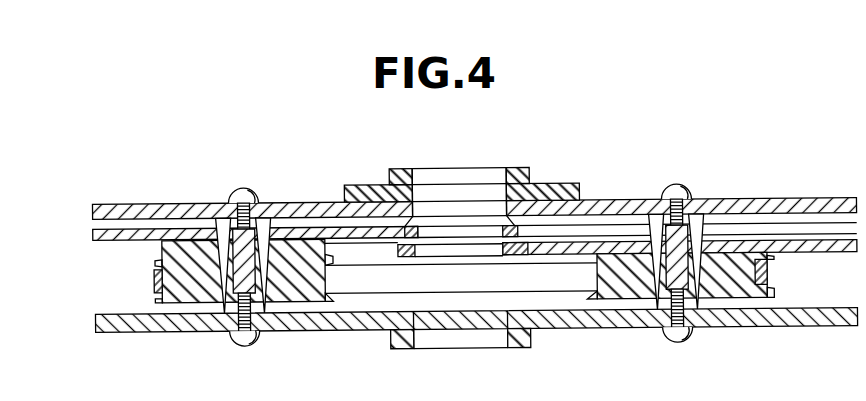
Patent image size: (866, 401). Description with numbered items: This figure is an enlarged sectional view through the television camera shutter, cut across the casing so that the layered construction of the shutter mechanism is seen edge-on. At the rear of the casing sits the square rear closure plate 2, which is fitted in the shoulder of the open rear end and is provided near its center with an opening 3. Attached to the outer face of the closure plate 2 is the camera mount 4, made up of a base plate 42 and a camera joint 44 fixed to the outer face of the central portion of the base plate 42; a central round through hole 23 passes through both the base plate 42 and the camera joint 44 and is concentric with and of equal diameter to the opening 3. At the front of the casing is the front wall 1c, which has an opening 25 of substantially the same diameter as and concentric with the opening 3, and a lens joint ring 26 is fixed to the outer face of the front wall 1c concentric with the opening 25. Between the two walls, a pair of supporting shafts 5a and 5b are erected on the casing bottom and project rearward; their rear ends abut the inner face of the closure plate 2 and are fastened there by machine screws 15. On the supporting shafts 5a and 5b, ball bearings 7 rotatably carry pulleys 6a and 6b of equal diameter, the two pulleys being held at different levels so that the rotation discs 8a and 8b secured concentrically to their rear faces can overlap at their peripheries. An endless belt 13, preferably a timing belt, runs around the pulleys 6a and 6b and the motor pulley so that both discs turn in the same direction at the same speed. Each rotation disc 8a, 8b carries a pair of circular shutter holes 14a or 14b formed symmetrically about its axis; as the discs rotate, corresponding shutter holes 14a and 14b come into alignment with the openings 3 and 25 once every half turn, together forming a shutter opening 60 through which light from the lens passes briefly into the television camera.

The front wall 1c is at (310, 329).
The rear closure plate 2 is at (166, 196).
The opening 3 is at (490, 200).
The camera mount 4 is at (548, 178).
The supporting shaft 5a is at (268, 224).
The supporting shaft 5b is at (700, 224).
The pulley 6a is at (162, 245).
The pulley 6b is at (767, 295).
The ball bearing 7 is at (283, 217).
The rotation disc 8a is at (330, 244).
The rotation disc 8b is at (547, 243).
The endless belt 13 is at (154, 279).
The shutter hole 14a is at (520, 168).
The shutter hole 14b is at (410, 257).
The machine screw 15 is at (244, 186).
The through hole 23 is at (428, 190).
The opening 25 is at (447, 348).
The lens joint ring 26 is at (398, 348).
The base plate 42 is at (571, 184).
The camera joint 44 is at (396, 168).
The shutter opening 60 is at (460, 252).